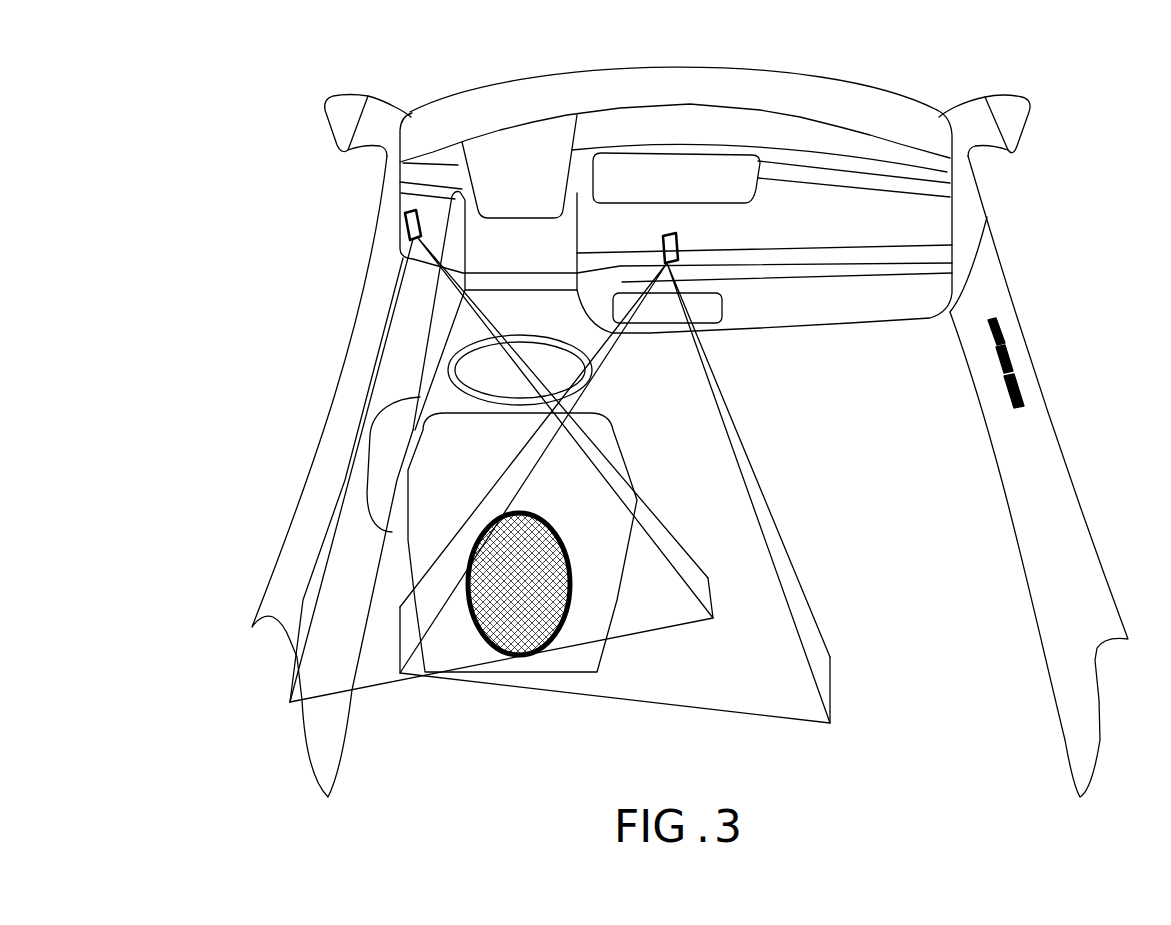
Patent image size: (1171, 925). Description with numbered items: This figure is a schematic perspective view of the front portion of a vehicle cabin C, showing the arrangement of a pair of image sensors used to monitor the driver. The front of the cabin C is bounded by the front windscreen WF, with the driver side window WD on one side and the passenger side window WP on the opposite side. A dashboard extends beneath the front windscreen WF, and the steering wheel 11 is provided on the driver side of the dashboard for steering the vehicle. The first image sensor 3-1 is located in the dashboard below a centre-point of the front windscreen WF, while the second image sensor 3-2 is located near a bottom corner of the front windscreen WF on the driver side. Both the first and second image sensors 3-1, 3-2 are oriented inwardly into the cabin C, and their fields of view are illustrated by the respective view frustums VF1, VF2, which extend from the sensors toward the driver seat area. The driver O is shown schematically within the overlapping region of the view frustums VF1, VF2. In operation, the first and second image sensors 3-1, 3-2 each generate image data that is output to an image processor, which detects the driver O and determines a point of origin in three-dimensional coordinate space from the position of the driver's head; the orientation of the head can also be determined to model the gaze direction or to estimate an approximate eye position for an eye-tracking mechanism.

The first image sensor 3-1 is at (669, 240).
The second image sensor 3-2 is at (406, 222).
The steering wheel 11 is at (448, 368).
The driver O is at (531, 629).
The vehicle cabin C is at (1066, 151).
The view frustum of first image sensor VF1 is at (723, 493).
The view frustum of second image sensor VF2 is at (360, 558).
The front windscreen WF is at (673, 60).
The driver side window WD is at (329, 446).
The passenger side window WP is at (1037, 446).